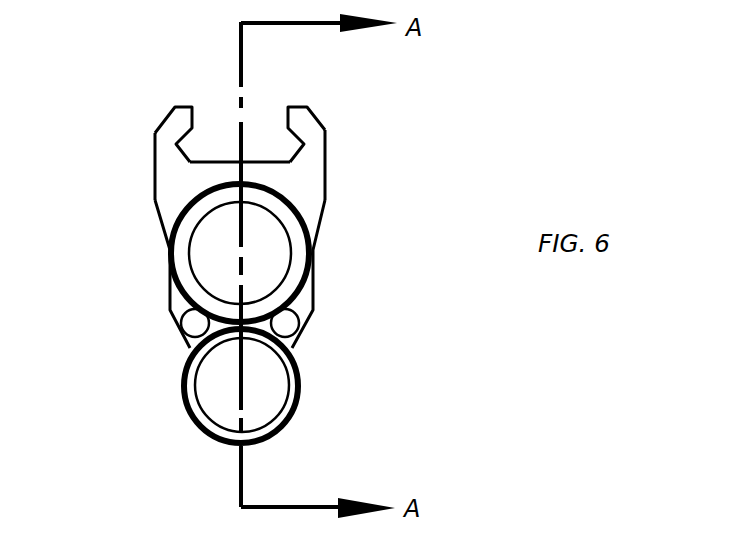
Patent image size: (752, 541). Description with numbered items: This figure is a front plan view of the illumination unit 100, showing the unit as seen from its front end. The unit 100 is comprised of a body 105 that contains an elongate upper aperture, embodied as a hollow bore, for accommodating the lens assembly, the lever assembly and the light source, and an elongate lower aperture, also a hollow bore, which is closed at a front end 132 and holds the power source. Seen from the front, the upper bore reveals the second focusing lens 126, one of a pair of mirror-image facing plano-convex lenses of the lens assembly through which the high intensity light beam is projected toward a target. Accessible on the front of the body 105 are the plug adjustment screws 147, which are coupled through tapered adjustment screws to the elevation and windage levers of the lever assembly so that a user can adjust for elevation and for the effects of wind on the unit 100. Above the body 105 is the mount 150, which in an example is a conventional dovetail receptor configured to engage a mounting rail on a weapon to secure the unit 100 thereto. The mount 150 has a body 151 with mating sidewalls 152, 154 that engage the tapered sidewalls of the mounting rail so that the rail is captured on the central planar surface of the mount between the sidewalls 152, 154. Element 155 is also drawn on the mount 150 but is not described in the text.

The unit 100 is at (410, 374).
The body 105 is at (311, 302).
The second focusing lens 126 is at (212, 248).
The front end 132 is at (267, 388).
The plug adjustment screw 147 is at (175, 329).
The mount 150 is at (354, 111).
The body of the mount 151 is at (327, 175).
The mating sidewall 152 is at (282, 136).
The mating sidewall 154 is at (192, 143).
The clip base 155 is at (207, 165).